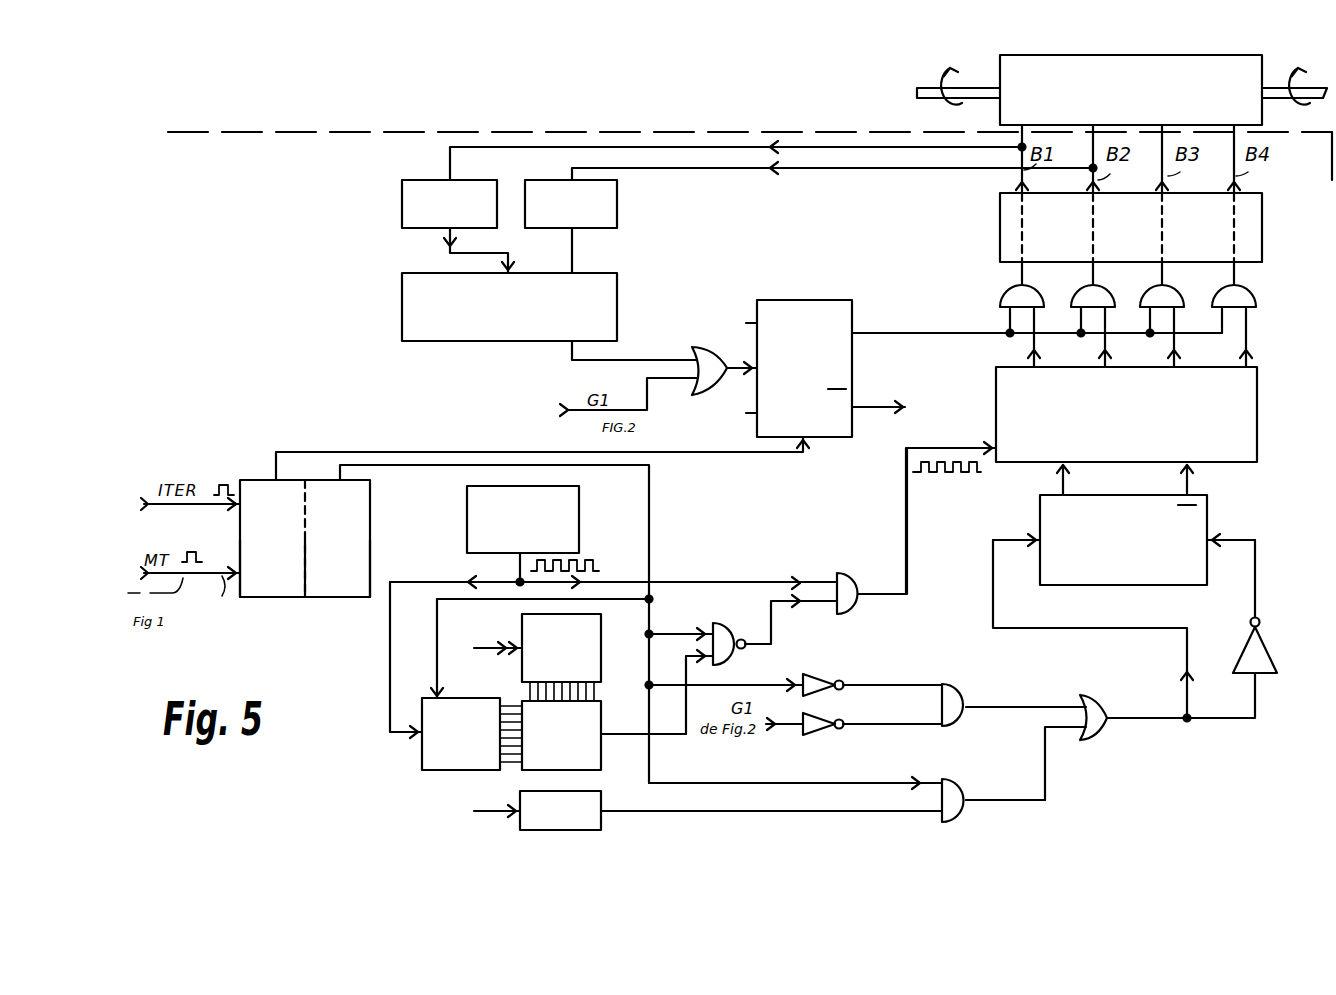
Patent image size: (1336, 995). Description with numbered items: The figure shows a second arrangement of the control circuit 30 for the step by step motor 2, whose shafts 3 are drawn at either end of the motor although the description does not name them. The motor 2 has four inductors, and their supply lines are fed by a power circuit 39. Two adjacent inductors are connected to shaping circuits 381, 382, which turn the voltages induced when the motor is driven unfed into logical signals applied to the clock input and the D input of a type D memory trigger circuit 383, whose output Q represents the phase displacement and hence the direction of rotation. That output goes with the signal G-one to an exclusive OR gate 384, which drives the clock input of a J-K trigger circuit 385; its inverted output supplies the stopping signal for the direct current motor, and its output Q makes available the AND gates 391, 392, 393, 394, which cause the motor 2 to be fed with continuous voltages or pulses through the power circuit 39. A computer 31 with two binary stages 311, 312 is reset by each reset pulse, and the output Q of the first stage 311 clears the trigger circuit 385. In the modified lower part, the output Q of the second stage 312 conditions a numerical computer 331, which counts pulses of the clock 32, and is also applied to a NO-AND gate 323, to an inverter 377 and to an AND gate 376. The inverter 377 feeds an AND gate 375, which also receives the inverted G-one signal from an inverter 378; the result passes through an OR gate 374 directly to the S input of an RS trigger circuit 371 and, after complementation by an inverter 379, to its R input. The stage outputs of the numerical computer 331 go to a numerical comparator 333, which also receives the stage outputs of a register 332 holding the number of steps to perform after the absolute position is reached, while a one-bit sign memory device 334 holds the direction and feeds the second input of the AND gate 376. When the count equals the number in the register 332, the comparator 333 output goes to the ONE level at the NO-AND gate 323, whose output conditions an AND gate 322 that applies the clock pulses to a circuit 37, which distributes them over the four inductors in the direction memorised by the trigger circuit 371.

The step by step motor 2 is at (1000, 120).
The motor shaft 3 is at (928, 100).
The control circuit 30 is at (333, 132).
The computer 31 is at (314, 479).
The first binary stage 311 is at (274, 598).
The second binary stage 312 is at (370, 535).
The clock 32 is at (579, 520).
The AND gate 322 is at (855, 562).
The NO-AND gate 323 is at (734, 613).
The numerical computer 331 is at (421, 757).
The register 332 is at (601, 655).
The numerical comparator 333 is at (601, 762).
The sign memory device 334 is at (601, 822).
The circuit 37 is at (1257, 412).
The bistable trigger circuit of RS type 371 is at (1207, 500).
The OR gate 374 is at (1108, 684).
The AND gate 375 is at (963, 697).
The AND gate 376 is at (960, 783).
The inverter 377 is at (828, 675).
The inverter 378 is at (820, 735).
The inverter 379 is at (1268, 650).
The shaping circuit 381 is at (411, 179).
The shaping circuit 382 is at (617, 203).
The bistable memory trigger circuit of type D 383 is at (617, 287).
The exclusive OR gate 384 is at (696, 348).
The bistable trigger circuit of J-K type 385 is at (815, 300).
The power circuit 39 is at (1262, 222).
The AND gate 391 is at (998, 294).
The AND gate 392 is at (1074, 294).
The AND gate 393 is at (1147, 294).
The AND gate 394 is at (1220, 294).